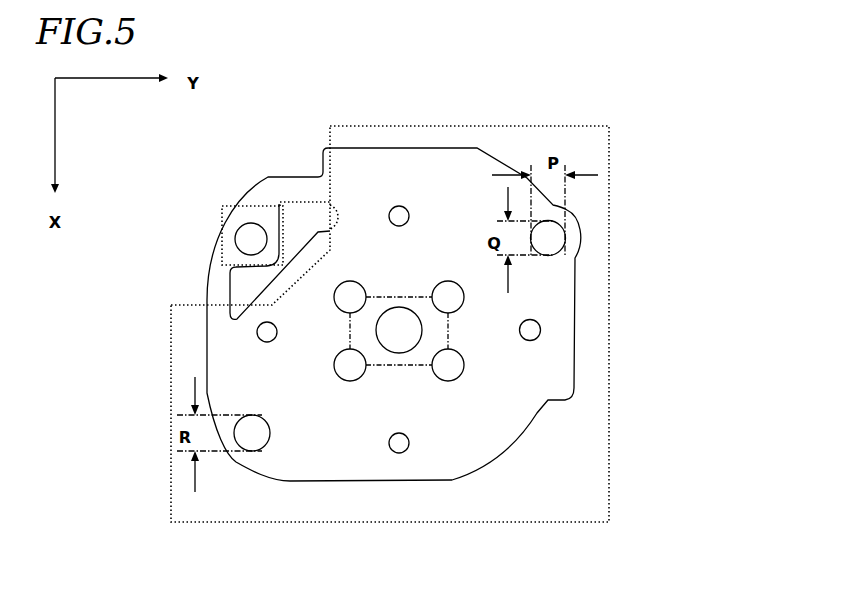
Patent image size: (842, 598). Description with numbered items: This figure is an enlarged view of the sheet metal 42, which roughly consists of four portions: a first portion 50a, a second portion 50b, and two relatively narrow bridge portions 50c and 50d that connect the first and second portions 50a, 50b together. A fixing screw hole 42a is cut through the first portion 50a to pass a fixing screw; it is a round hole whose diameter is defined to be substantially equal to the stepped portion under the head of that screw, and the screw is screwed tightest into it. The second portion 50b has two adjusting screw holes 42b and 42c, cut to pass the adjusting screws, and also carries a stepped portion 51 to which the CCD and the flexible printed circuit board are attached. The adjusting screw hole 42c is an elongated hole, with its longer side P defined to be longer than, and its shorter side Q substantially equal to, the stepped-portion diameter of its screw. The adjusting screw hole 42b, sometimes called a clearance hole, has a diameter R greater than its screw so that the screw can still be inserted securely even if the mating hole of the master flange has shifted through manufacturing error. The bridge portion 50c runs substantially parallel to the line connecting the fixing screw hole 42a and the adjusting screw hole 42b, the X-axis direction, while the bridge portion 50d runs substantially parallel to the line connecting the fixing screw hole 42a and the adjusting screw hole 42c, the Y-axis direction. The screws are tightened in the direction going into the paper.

The sheet metal 42 is at (147, 342).
The fixing screw hole 42a is at (252, 238).
The adjusting screw hole 42b is at (252, 437).
The adjusting screw hole 42c is at (550, 240).
The first portion 50a is at (222, 218).
The second portion 50b is at (609, 457).
The bridge portion 50c is at (218, 287).
The bridge portion 50d is at (310, 187).
The stepped portion 51 is at (389, 367).